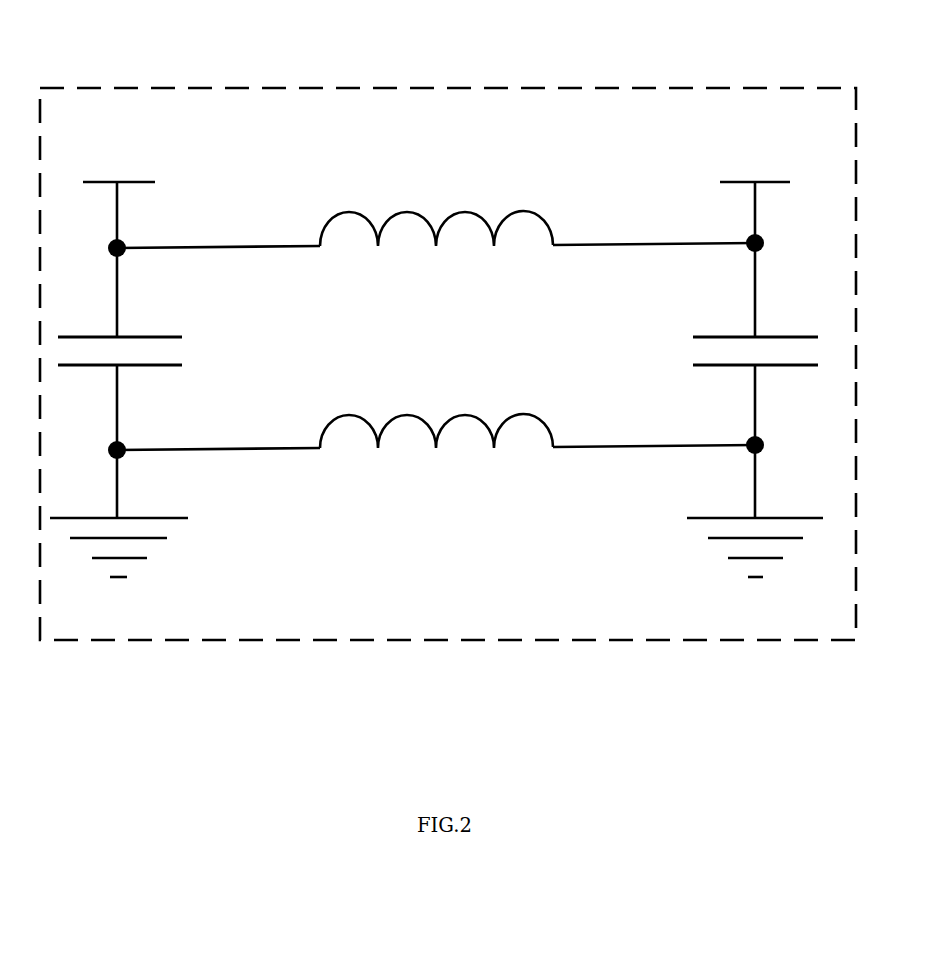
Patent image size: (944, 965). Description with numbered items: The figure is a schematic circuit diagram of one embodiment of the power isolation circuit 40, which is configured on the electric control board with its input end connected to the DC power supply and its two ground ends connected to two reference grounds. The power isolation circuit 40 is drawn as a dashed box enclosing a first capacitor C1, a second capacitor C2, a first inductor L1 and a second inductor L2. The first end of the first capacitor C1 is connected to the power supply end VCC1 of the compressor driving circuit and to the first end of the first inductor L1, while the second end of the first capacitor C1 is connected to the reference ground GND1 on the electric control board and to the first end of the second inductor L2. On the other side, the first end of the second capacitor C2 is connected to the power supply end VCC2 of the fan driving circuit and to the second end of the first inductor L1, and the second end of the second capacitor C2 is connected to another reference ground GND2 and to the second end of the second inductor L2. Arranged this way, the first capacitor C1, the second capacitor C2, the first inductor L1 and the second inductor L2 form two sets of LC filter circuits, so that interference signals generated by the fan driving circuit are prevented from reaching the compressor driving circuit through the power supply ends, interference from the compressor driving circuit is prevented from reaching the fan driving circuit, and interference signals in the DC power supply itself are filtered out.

The power isolation circuit 40 is at (567, 88).
The first inductor L1 is at (436, 190).
The second inductor L2 is at (436, 392).
The first capacitor C1 is at (152, 415).
The second capacitor C2 is at (720, 416).
The power supply end of the compressor driving circuit VCC1 is at (142, 228).
The power supply end of the fan driving circuit VCC2 is at (751, 228).
The reference ground GND1 is at (126, 578).
The another reference ground GND2 is at (749, 582).